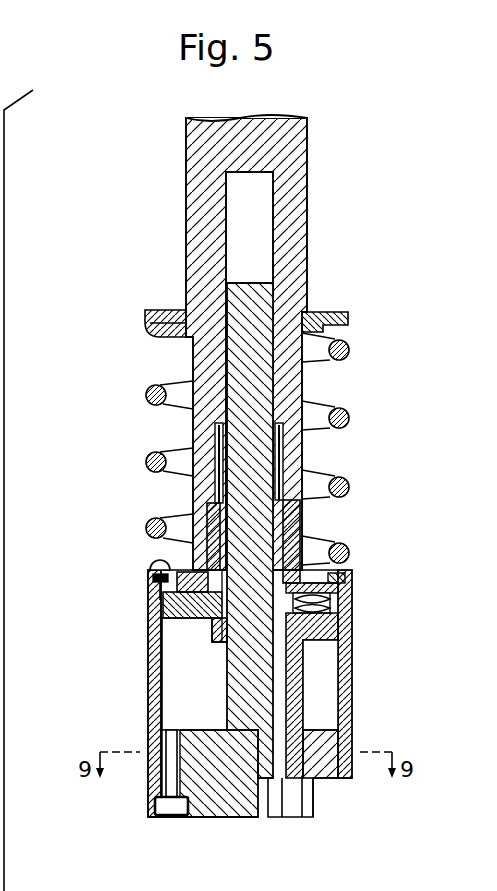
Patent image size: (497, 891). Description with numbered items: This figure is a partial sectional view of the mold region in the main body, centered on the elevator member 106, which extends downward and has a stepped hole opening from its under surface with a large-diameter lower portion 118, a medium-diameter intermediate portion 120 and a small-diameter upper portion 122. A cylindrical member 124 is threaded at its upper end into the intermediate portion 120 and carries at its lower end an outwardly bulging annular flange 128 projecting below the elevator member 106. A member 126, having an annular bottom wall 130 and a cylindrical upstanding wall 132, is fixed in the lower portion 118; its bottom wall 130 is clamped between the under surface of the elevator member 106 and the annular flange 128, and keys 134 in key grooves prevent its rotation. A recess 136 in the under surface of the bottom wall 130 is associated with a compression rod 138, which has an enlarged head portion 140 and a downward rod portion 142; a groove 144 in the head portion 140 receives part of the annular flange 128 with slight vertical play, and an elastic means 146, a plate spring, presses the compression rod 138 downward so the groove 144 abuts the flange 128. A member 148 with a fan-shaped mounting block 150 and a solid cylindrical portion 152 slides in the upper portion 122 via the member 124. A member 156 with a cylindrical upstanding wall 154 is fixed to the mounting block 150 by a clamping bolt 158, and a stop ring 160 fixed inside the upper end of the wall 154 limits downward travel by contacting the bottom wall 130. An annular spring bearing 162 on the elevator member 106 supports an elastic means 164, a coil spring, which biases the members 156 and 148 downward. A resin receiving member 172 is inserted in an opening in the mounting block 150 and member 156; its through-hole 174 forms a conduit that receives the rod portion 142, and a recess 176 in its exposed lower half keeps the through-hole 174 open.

The elevator member 106 is at (308, 204).
The large-diameter lower portion 118 is at (292, 528).
The medium-diameter intermediate portion 120 is at (275, 470).
The small-diameter upper portion 122 is at (270, 381).
The member 124 is at (147, 640).
The member 126 is at (200, 526).
The annular flange 128 is at (223, 598).
The annular bottom wall 130 is at (160, 605).
The cylindrical upstanding wall 132 is at (207, 547).
The keys 134 is at (148, 596).
The recess 136 is at (343, 612).
The compression rod 138 is at (312, 682).
The enlarged head portion 140 is at (318, 638).
The rod portion 142 is at (297, 713).
The groove 144 is at (262, 650).
The elastic means 146 is at (335, 582).
The member 148 is at (217, 822).
The mounting block 150 is at (190, 782).
The solid cylindrical portion 152 is at (216, 442).
The cylindrical upstanding wall 154 is at (148, 674).
The member 156 is at (140, 729).
The clamping bolt 158 is at (172, 816).
The stop ring 160 is at (150, 572).
The annular spring bearing 162 is at (158, 310).
The elastic means 164 is at (150, 390).
The resin receiving member 172 is at (324, 800).
The through-hole 174 is at (298, 807).
The recess 176 is at (289, 800).